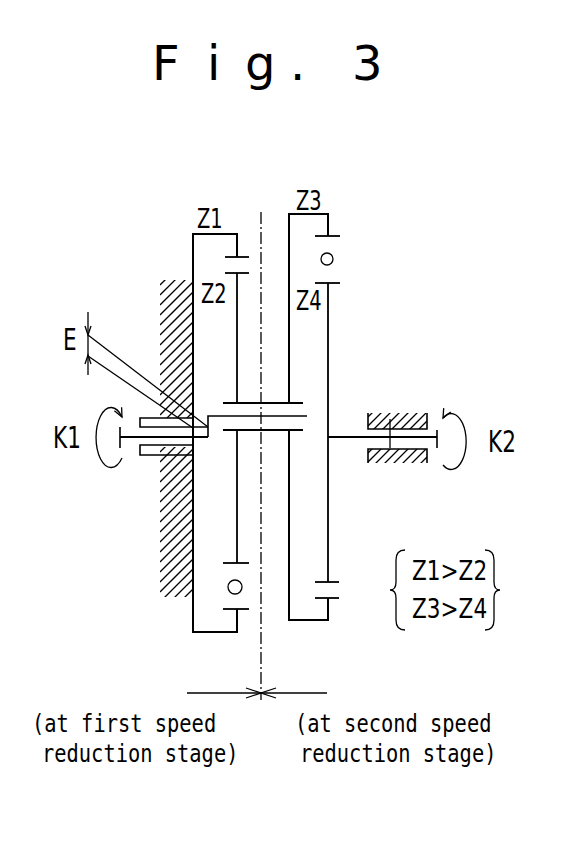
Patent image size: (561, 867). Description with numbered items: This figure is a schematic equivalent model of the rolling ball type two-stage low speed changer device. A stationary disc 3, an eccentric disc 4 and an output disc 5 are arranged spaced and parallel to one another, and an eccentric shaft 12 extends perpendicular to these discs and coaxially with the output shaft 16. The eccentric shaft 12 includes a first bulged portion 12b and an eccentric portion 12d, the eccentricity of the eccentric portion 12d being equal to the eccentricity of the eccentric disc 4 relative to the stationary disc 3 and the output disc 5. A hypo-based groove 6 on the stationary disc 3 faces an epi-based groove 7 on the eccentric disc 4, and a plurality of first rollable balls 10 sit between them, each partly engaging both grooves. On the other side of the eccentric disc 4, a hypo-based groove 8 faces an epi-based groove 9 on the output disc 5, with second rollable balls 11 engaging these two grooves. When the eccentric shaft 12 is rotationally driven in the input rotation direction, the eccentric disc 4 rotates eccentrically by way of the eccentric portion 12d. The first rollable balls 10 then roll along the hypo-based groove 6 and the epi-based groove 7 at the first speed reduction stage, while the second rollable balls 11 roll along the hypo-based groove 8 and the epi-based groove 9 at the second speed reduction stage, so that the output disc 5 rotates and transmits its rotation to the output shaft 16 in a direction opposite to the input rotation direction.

The stationary disc 3 is at (153, 268).
The eccentric disc 4 is at (288, 328).
The output disc 5 is at (327, 345).
The hypo-based groove 6 is at (235, 262).
The epi-based groove 7 is at (238, 325).
The hypo-based groove 8 is at (330, 240).
The epi-based groove 9 is at (330, 281).
The first rollable balls 10 is at (240, 592).
The second rollable balls 11 is at (333, 258).
The eccentric shaft 12 is at (133, 446).
The first bulged portion 12b is at (170, 440).
The eccentric portion 12d is at (228, 417).
The output shaft 16 is at (390, 418).